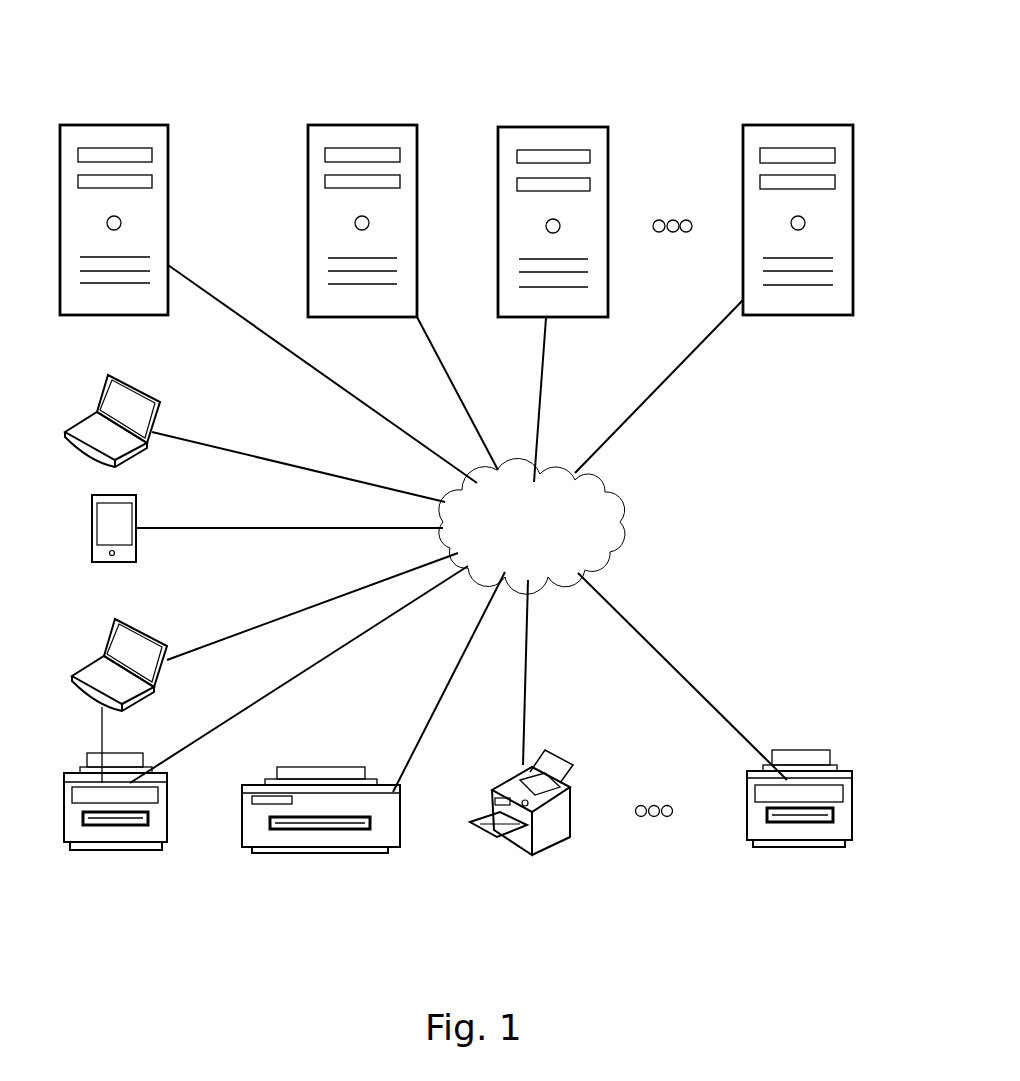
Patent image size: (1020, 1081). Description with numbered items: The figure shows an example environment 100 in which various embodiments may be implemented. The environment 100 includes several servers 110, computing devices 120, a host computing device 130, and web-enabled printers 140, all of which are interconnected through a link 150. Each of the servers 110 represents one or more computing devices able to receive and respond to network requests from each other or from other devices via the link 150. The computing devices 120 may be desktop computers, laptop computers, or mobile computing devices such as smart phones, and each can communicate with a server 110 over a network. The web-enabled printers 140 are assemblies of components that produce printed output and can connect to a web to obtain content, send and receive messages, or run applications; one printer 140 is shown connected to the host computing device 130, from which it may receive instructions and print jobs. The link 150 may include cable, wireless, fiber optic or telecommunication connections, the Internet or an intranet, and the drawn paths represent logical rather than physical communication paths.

The environment 100 is at (600, 37).
The servers 110 is at (112, 122).
The computing devices 120 is at (155, 392).
The host computing device 130 is at (150, 633).
The web-enabled printers 140 is at (108, 853).
The link 150 is at (612, 492).